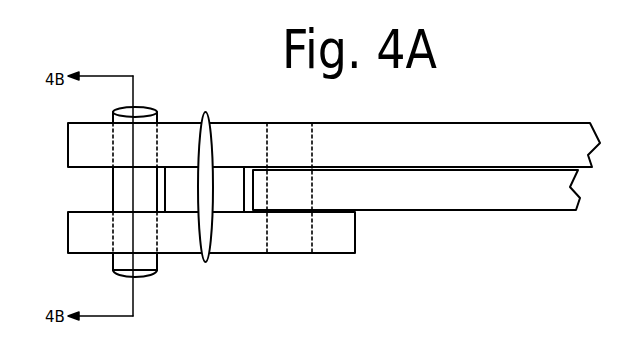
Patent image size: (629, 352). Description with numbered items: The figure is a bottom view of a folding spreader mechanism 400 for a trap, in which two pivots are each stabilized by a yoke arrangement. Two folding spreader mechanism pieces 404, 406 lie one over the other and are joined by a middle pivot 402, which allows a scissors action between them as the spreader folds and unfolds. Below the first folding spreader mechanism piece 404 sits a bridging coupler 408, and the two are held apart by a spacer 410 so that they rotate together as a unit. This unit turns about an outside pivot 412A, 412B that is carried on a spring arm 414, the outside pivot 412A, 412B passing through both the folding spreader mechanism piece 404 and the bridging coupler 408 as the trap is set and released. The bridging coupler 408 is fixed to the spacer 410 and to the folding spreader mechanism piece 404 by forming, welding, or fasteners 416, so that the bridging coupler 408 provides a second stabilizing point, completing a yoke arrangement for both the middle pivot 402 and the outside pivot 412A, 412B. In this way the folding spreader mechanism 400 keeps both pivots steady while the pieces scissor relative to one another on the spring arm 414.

The folding spreader mechanism 400 is at (553, 60).
The middle pivot 402 is at (312, 239).
The folding spreader mechanism piece 404 is at (448, 153).
The folding spreader mechanism piece 406 is at (453, 199).
The bridging coupler 408 is at (75, 225).
The spacer 410 is at (224, 196).
The outside pivot 412A is at (112, 138).
The outside pivot 412B is at (112, 240).
The spring arm 414 is at (115, 185).
The fasteners 416 is at (203, 243).